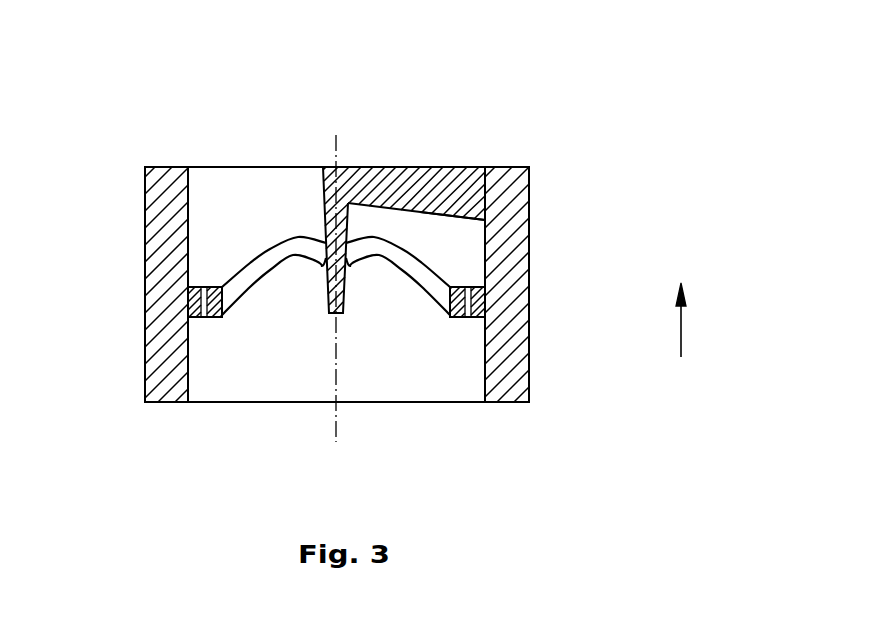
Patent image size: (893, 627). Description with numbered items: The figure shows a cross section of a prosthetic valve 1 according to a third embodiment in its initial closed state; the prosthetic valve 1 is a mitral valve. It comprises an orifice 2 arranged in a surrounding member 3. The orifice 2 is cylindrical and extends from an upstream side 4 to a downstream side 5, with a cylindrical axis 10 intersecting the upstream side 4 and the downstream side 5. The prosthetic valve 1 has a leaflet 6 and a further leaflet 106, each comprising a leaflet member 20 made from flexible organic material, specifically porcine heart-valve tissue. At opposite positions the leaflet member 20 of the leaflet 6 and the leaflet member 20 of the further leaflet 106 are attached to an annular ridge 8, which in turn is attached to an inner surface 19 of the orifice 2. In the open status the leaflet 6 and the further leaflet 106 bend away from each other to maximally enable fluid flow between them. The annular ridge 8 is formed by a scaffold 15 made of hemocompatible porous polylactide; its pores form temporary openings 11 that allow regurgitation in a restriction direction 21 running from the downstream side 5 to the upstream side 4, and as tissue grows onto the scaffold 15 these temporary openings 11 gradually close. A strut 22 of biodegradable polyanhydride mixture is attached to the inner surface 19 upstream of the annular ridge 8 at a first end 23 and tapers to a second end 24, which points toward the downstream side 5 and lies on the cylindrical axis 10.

The prosthetic valve 1 is at (122, 143).
The orifice 2 is at (227, 372).
The surrounding member 3 is at (513, 366).
The upstream side 4 is at (270, 167).
The downstream side 5 is at (267, 402).
The leaflet 6 is at (262, 248).
The annular ridge 8 is at (189, 306).
The cylindrical axis 10 is at (336, 430).
The temporary openings 11 is at (203, 287).
The scaffold 15 is at (458, 317).
The inner surface 19 is at (489, 221).
The leaflet member 20 is at (387, 242).
The restriction direction 21 is at (682, 326).
The strut 22 is at (366, 185).
The first end 23 is at (455, 185).
The second end 24 is at (346, 313).
The further leaflet 106 is at (413, 272).